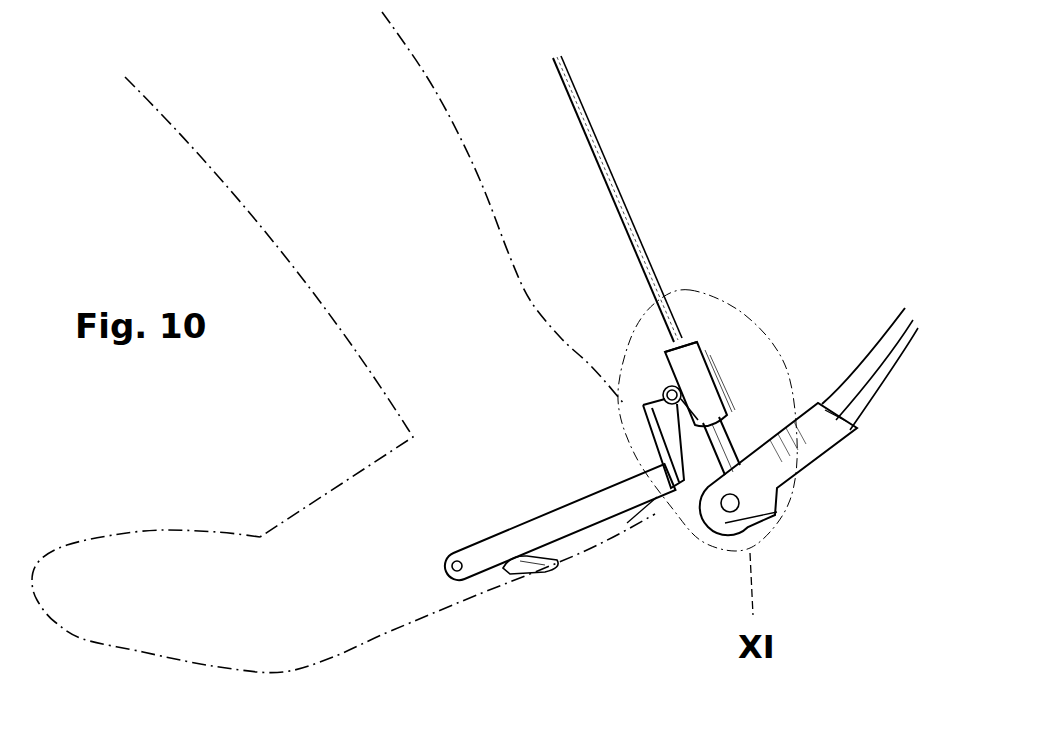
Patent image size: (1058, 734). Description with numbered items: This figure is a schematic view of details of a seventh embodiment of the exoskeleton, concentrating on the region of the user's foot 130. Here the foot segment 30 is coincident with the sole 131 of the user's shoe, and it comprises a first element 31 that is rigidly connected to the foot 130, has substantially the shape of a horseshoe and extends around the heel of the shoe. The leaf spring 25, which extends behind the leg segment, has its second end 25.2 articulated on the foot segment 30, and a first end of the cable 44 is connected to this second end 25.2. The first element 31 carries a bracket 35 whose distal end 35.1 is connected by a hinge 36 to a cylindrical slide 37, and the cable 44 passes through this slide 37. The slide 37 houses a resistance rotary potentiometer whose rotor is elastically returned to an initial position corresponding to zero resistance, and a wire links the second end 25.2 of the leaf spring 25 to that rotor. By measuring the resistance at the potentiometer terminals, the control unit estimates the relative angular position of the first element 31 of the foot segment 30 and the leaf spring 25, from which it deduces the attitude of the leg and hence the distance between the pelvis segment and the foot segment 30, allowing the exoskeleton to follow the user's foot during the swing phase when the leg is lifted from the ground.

The foot 130 is at (195, 505).
The sole 131 is at (355, 629).
The cable 44 is at (592, 133).
The hinge 36 is at (717, 378).
The cylindrical slide 37 is at (697, 342).
The leaf spring 25 is at (877, 350).
The second end of the leaf spring 25.2 is at (727, 527).
The bracket 35 is at (643, 418).
The distal end of the bracket 35.1 is at (645, 404).
The first element of the foot segment 31 is at (550, 520).
The foot segment 30 is at (480, 563).